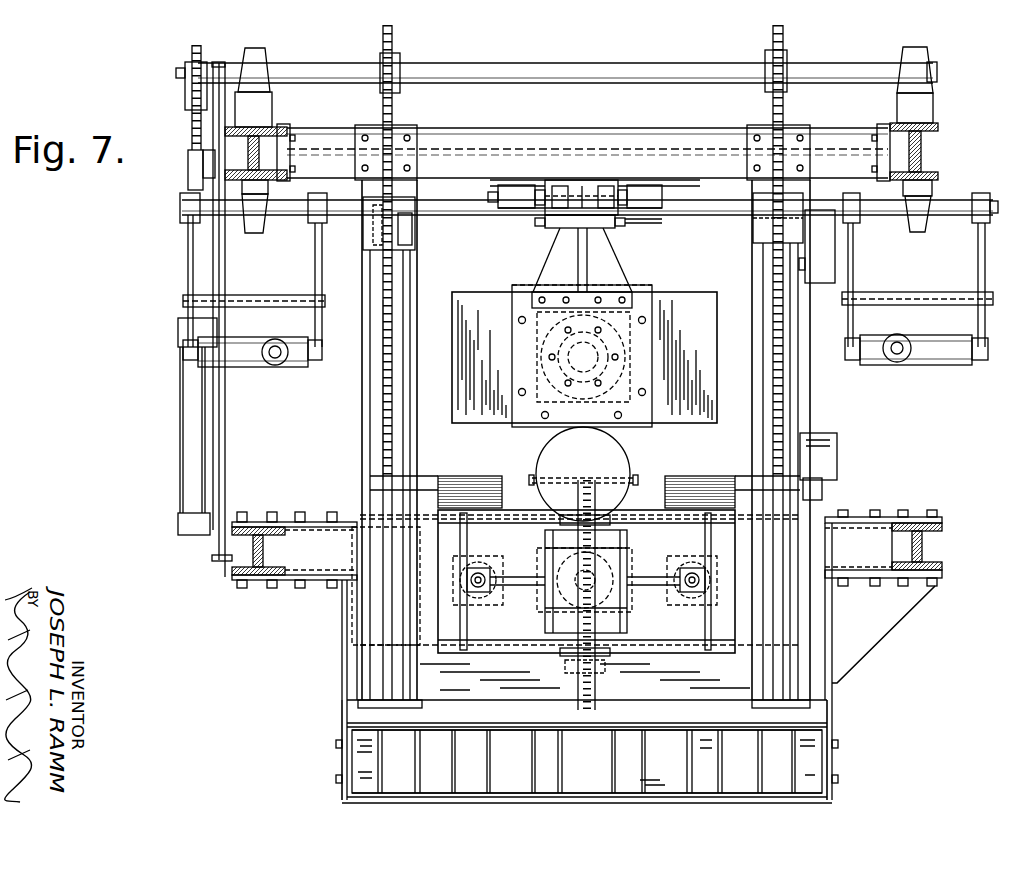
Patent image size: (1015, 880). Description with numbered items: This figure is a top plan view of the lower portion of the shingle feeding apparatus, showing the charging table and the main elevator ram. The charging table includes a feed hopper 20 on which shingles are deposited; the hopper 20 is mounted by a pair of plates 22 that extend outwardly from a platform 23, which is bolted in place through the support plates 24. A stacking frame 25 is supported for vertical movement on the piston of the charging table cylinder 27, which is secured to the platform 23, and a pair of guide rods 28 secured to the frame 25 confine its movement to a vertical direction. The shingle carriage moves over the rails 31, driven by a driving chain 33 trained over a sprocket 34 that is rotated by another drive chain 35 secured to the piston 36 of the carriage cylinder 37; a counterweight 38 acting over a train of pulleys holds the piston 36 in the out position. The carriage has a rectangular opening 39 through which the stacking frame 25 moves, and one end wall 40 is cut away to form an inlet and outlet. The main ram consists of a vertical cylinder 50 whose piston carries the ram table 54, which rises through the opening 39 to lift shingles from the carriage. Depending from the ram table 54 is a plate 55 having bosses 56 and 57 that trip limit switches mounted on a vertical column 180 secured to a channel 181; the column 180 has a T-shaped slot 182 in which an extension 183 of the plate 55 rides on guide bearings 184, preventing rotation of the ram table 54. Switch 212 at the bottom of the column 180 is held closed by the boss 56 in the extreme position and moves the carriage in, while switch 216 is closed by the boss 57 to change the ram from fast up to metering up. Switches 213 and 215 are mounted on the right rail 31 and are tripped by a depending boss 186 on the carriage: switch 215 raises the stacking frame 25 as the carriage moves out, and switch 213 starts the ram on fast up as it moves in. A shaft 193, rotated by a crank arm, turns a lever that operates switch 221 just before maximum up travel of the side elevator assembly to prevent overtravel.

The feed hopper 20 is at (342, 806).
The plates 22 is at (340, 684).
The platform 23 is at (346, 625).
The support plates 24 is at (283, 518).
The stacking frame 25 is at (482, 533).
The charging table cylinder 27 is at (612, 565).
The guide rods 28 is at (488, 598).
The rails 31 is at (403, 402).
The driving chain 33 is at (381, 386).
The sprocket 34 is at (394, 42).
The drive chain 35 is at (192, 104).
The piston 36 is at (188, 170).
The carriage cylinder 37 is at (180, 422).
The counterweight 38 is at (630, 462).
The rectangular opening 39 is at (706, 650).
The end wall 40 is at (670, 490).
The vertical cylinder 50 is at (620, 358).
The ram table 54 is at (690, 295).
The plate 55 is at (548, 265).
The boss 56 is at (543, 226).
The boss 57 is at (640, 220).
The vertical column 180 is at (612, 190).
The channel 181 is at (492, 174).
The T-shaped slot 182 is at (558, 190).
The extension 183 is at (603, 190).
The guide bearings 184 is at (572, 195).
The depending boss 186 is at (820, 478).
The shaft 193 is at (412, 232).
The switch 212 is at (500, 210).
The switch 213 is at (830, 285).
The switch 215 is at (822, 452).
The switch 216 is at (660, 195).
The switch 221 is at (378, 238).